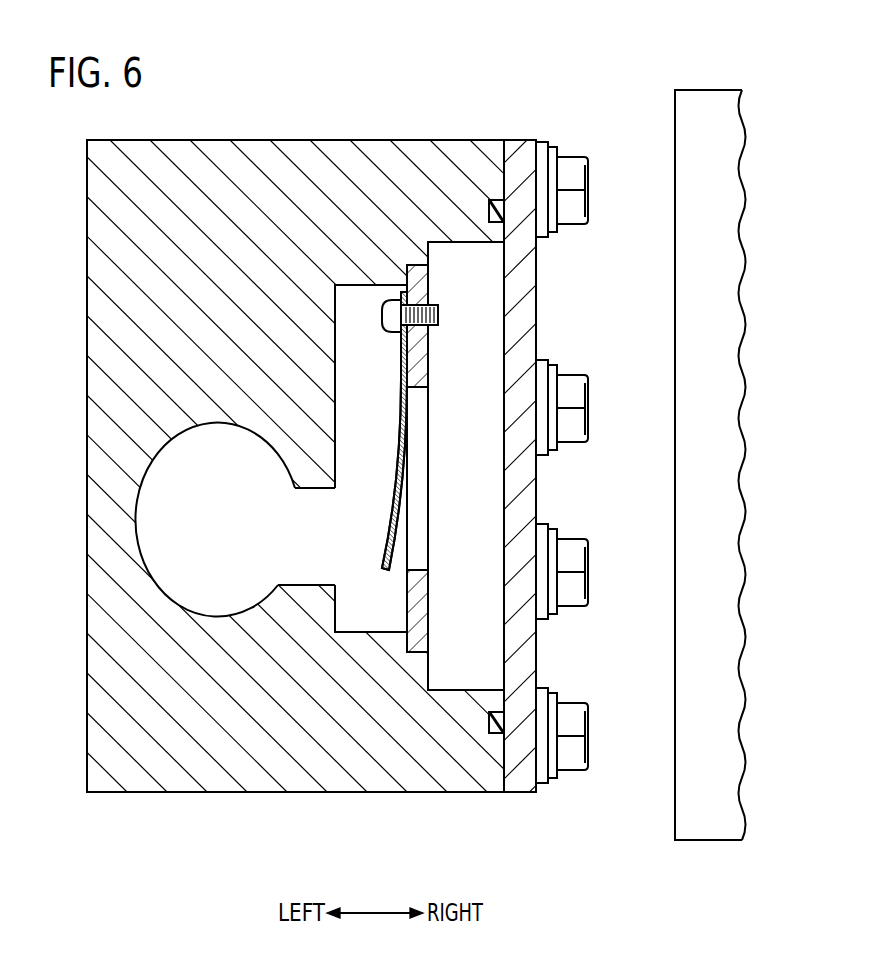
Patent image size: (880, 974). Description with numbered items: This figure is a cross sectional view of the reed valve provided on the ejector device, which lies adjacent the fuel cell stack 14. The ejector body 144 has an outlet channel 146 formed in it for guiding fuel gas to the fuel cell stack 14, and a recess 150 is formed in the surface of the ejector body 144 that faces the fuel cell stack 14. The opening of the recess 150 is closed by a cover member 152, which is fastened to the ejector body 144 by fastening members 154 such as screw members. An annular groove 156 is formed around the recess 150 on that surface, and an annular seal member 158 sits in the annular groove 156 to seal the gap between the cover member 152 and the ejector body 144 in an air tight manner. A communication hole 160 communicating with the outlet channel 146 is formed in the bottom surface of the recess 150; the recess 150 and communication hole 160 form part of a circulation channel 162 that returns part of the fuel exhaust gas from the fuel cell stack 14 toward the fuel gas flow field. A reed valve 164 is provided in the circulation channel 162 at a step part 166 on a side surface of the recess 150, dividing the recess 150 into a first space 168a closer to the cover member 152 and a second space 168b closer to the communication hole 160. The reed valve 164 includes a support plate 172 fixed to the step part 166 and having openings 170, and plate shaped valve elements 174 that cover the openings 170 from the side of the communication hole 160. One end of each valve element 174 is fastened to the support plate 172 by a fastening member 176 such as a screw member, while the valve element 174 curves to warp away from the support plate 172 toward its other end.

The fuel cell stack 14 is at (711, 88).
The ejector body 144 is at (153, 776).
The outlet channel 146 is at (217, 590).
The recess 150 is at (479, 662).
The cover member 152 is at (519, 782).
The fastening member 154 is at (578, 752).
The annular groove 156 is at (498, 210).
The annular seal member 158 is at (497, 721).
The communication hole 160 is at (307, 565).
The circulation channel 162 is at (516, 466).
The reed valve 164 is at (456, 303).
The step part 166 is at (416, 642).
The first space 168a is at (470, 517).
The second space 168b is at (388, 620).
The opening 170 is at (415, 482).
The support plate 172 is at (422, 345).
The valve element 174 is at (408, 348).
The fastening member 176 is at (390, 313).